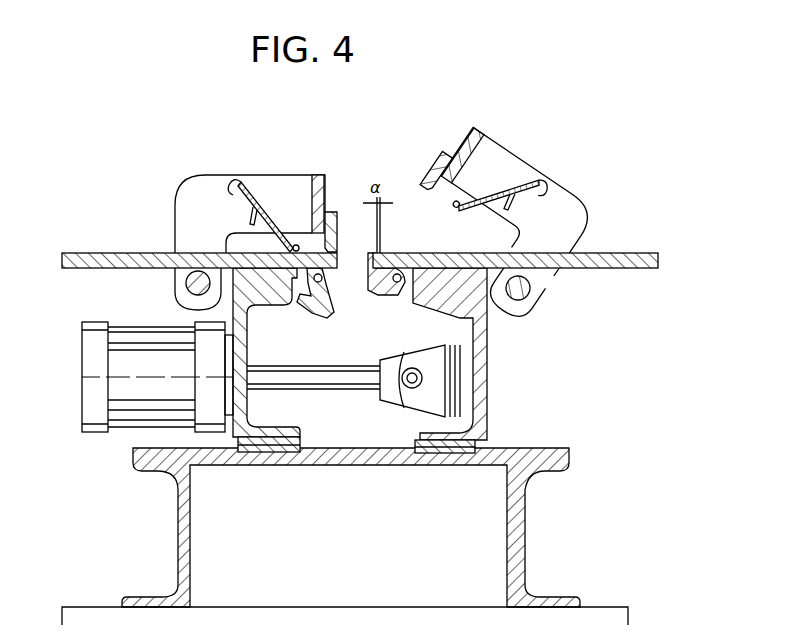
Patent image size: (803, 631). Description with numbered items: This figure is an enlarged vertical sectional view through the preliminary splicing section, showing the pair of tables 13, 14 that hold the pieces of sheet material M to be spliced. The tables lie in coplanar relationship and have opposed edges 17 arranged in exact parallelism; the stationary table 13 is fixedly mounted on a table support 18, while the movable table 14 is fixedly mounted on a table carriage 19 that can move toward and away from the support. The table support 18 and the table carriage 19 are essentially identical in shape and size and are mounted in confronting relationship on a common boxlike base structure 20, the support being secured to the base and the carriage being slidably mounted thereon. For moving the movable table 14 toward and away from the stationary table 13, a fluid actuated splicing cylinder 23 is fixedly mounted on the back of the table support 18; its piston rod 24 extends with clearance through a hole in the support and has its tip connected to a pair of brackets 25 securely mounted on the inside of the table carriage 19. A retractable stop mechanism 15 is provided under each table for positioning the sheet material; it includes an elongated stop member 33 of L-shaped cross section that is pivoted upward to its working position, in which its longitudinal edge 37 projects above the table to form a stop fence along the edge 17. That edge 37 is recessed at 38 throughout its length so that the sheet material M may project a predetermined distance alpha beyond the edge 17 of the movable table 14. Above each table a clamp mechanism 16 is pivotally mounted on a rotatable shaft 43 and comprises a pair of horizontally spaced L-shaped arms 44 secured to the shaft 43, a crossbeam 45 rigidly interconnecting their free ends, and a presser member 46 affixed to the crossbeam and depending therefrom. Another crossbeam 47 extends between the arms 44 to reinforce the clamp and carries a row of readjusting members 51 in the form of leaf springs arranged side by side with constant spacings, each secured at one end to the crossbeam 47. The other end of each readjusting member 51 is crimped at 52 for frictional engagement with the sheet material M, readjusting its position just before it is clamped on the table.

The stationary table 13 is at (128, 253).
The movable table 14 is at (466, 258).
The retractable stop mechanism 15 is at (384, 360).
The clamp mechanism 16 is at (380, 199).
The table edge 17 is at (359, 289).
The table support 18 is at (277, 297).
The table carriage 19 is at (480, 327).
The base structure 20 is at (555, 449).
The splicing cylinder 23 is at (126, 323).
The piston rod 24 is at (272, 379).
The bracket 25 is at (432, 408).
The stop member 33 is at (300, 322).
The longitudinal edge of stop member 37 is at (366, 263).
The recess 38 is at (335, 318).
The rotatable shaft 43 is at (186, 283).
The L-shaped arm 44 is at (188, 190).
The crossbeam 45 is at (314, 175).
The presser member 46 is at (333, 210).
The reinforcing crossbeam 47 is at (235, 195).
The readjusting member 51 is at (297, 243).
The crimped end 52 is at (432, 205).
The sheet material M is at (630, 255).